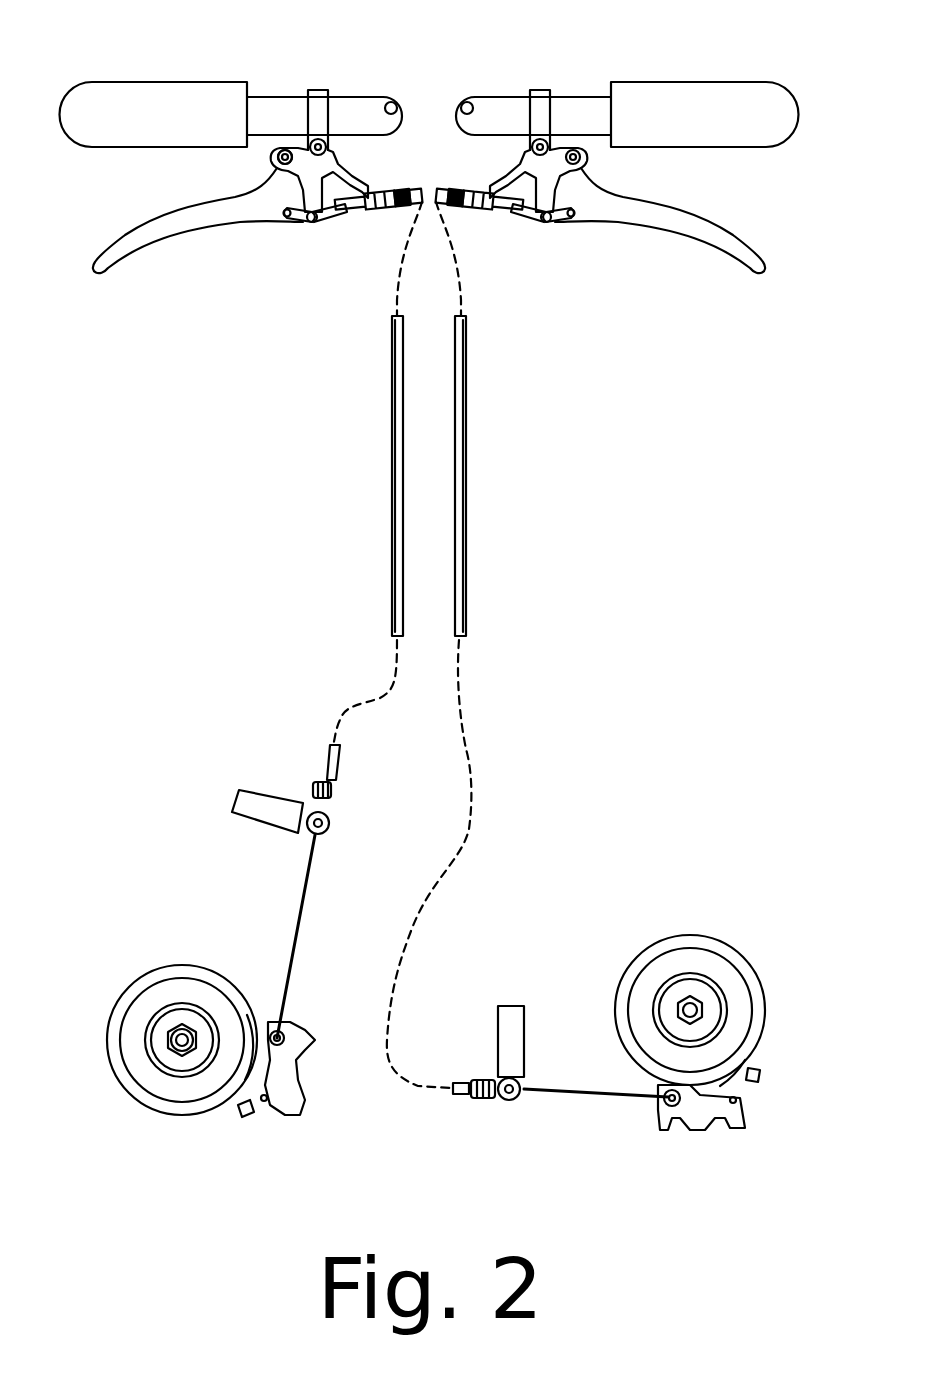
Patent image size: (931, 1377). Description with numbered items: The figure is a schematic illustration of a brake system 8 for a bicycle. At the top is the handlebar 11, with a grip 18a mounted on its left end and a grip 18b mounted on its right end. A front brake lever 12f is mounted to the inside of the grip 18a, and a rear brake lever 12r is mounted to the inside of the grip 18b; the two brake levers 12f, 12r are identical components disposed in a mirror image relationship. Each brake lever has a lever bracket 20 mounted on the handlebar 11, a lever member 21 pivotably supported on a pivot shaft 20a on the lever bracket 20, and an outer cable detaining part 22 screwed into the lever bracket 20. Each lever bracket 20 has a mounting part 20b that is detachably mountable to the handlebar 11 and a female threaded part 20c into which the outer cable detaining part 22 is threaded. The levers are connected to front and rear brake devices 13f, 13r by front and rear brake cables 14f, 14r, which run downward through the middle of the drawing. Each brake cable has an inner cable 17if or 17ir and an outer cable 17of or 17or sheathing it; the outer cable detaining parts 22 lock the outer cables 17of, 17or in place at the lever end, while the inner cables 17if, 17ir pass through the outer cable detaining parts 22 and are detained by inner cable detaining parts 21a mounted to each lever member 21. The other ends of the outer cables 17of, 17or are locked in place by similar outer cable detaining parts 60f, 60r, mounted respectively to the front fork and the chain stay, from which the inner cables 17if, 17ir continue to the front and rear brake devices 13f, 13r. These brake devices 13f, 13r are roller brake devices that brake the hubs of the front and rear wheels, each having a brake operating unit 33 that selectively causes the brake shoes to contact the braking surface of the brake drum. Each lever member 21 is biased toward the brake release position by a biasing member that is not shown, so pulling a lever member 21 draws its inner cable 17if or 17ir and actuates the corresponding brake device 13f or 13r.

The brake system 8 is at (429, 597).
The handlebar 11 is at (275, 107).
The front brake lever 12f is at (241, 178).
The rear brake lever 12r is at (616, 179).
The front brake device 13f is at (241, 1013).
The rear brake device 13r is at (725, 1123).
The front brake cable 14f is at (395, 590).
The rear brake cable 14r is at (462, 585).
The outer cable 17of is at (326, 484).
The outer cable 17or is at (530, 476).
The inner cable 17if is at (360, 700).
The inner cable 17ir is at (469, 747).
The grip 18a is at (160, 100).
The grip 18b is at (705, 100).
The lever bracket 20 is at (318, 100).
The pivot shaft 20a is at (273, 158).
The mounting part 20b is at (335, 158).
The female threaded part 20c is at (343, 230).
The lever member 21 is at (153, 228).
The inner cable detaining part 21a is at (303, 228).
The outer cable detaining part 22 is at (392, 228).
The brake operating unit 33 is at (290, 1100).
The outer cable detaining part 60f is at (340, 792).
The outer cable detaining part 60r is at (488, 1100).